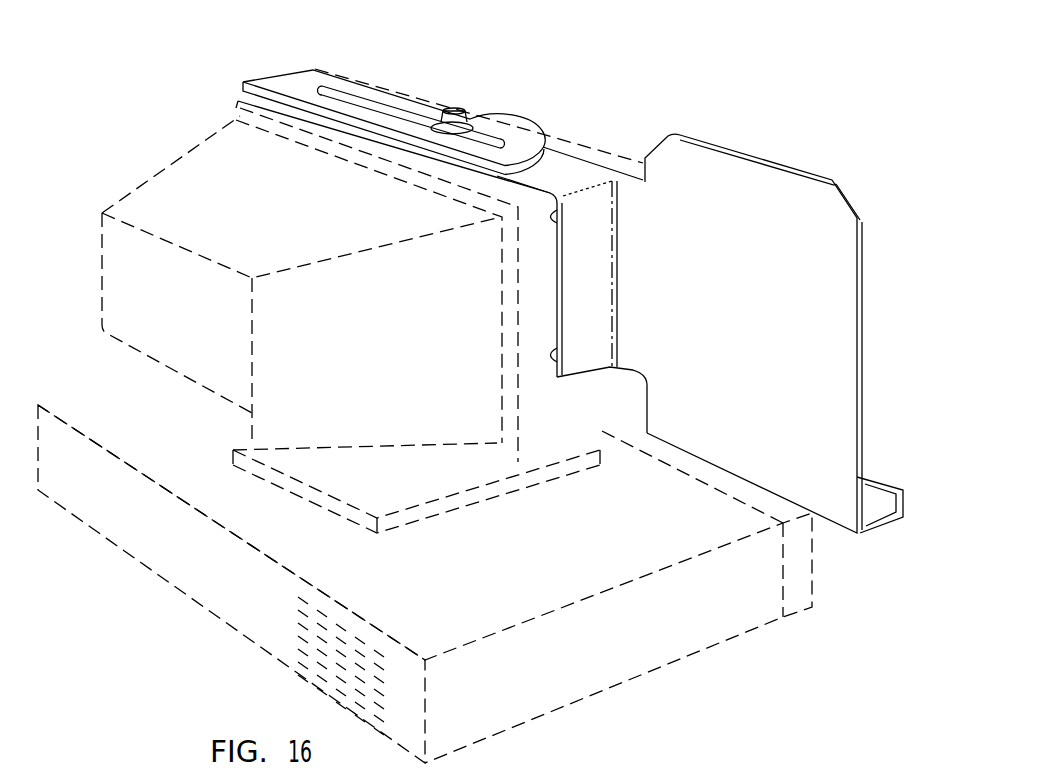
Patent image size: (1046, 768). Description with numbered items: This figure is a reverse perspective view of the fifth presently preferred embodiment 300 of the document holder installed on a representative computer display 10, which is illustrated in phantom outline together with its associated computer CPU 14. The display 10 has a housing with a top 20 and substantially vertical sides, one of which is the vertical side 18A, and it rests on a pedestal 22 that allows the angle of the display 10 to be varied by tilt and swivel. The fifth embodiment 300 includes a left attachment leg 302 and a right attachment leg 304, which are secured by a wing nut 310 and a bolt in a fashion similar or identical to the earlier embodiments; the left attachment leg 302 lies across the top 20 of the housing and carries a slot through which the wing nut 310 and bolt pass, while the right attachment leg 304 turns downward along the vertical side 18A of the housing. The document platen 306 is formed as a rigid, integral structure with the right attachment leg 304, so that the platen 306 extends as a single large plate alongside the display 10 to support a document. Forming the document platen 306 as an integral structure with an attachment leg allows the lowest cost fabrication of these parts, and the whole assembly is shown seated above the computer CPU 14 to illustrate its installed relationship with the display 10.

The computer display 10 is at (223, 128).
The computer CPU 14 is at (620, 637).
The vertical side 18A is at (600, 420).
The top 20 is at (538, 130).
The pedestal 22 is at (427, 487).
The fifth embodiment 300 is at (569, 294).
The left attachment leg 302 is at (488, 390).
The right attachment leg 304 is at (572, 177).
The document platen 306 is at (765, 305).
The wing nut 310 is at (455, 112).